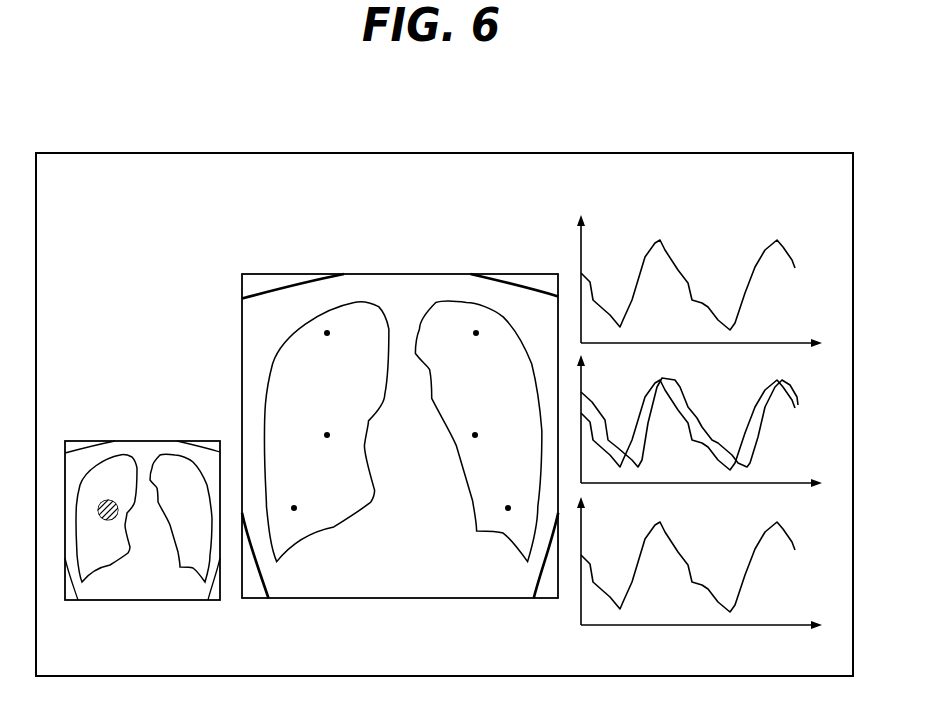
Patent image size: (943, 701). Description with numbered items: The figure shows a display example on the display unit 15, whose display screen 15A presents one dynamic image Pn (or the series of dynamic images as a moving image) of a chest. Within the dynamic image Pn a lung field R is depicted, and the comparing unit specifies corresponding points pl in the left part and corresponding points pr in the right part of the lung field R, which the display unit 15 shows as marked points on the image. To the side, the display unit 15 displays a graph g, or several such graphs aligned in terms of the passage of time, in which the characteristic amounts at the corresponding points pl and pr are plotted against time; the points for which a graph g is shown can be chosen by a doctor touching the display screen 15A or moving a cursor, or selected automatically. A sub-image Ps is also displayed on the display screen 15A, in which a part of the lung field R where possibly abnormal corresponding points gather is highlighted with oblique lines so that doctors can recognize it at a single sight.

The display unit 15 is at (136, 147).
The display screen 15A is at (742, 172).
The sub-image Ps is at (143, 441).
The dynamic image Pn is at (422, 236).
The lung field R is at (193, 553).
The corresponding point in the right part pr is at (312, 420).
The corresponding point in the left part pl is at (495, 420).
The graph g is at (643, 246).